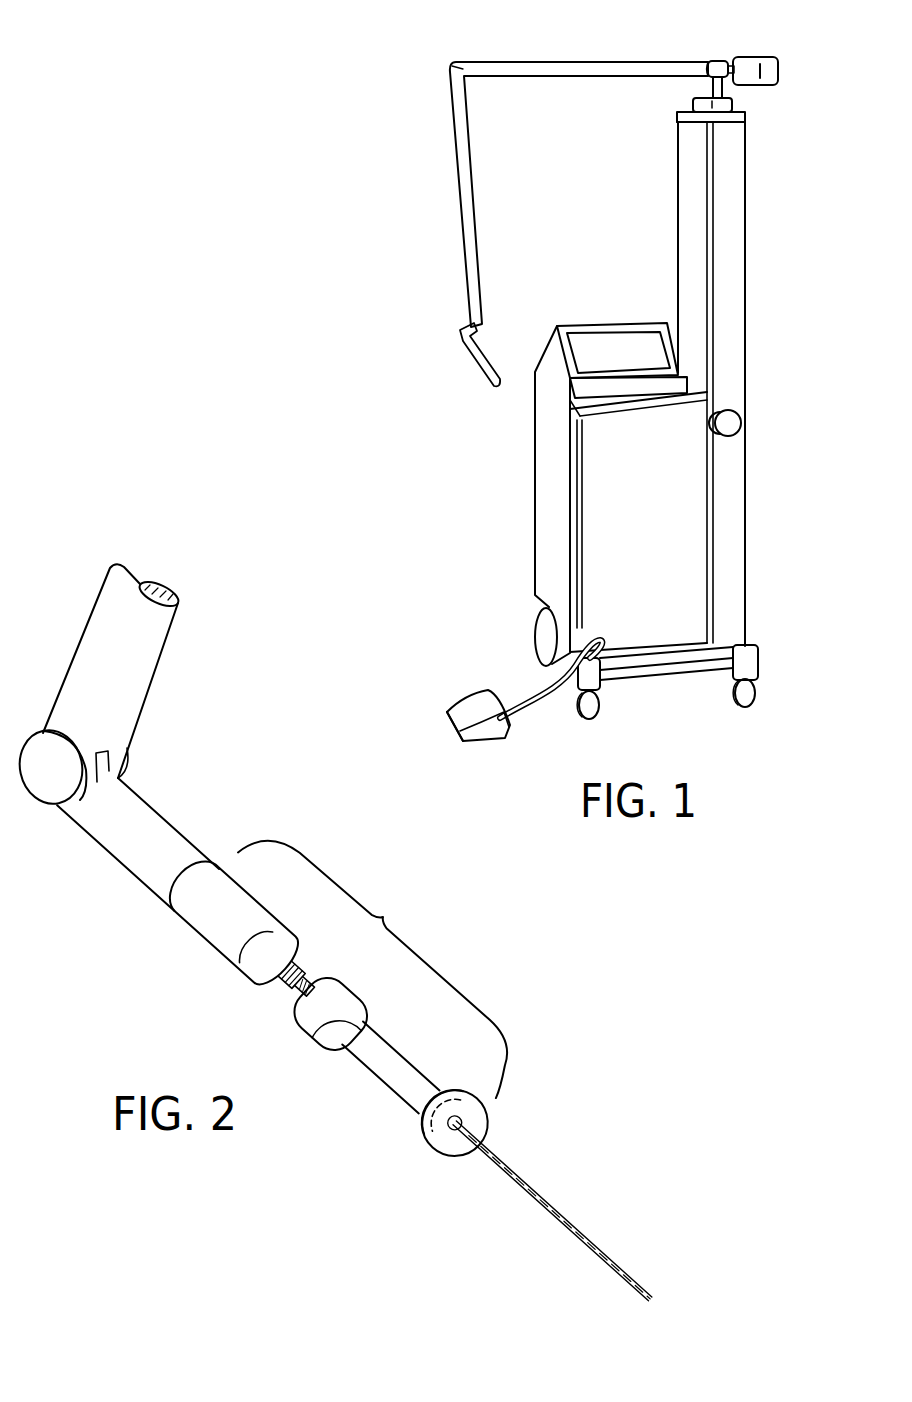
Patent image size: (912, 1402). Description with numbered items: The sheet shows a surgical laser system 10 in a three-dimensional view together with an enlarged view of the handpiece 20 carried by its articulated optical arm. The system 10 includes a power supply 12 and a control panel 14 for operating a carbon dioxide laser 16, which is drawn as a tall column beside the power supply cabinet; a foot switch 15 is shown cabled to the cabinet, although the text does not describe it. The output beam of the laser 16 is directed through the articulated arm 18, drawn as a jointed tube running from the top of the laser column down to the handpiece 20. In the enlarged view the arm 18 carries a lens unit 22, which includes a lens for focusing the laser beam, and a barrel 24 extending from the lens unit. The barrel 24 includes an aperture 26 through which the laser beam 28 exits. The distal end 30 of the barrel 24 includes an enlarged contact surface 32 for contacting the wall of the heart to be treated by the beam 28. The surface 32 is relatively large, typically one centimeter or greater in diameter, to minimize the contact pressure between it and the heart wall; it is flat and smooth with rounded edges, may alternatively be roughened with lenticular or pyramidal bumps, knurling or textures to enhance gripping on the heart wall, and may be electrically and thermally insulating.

In FIG. 1, the surgical laser system 10 is at (855, 309).
In FIG. 1, the power supply 12 is at (544, 510).
In FIG. 1, the control panel 14 is at (600, 345).
In FIG. 1, the foot pedal 15 is at (468, 703).
In FIG. 1, the CO2 laser 16 is at (738, 210).
In FIG. 1, the articulated arm 18 is at (601, 62).
In FIG. 2, the articulated arm 18 is at (148, 703).
In FIG. 1, the handpiece 20 is at (483, 375).
In FIG. 2, the handpiece 20 is at (383, 957).
In FIG. 2, the lens unit 22 is at (198, 937).
In FIG. 2, the barrel 24 is at (400, 1050).
In FIG. 2, the aperture 26 is at (452, 1154).
In FIG. 2, the laser beam 28 is at (298, 988).
In FIG. 2, the distal end 30 is at (398, 1146).
In FIG. 2, the contact surface 32 is at (474, 1112).